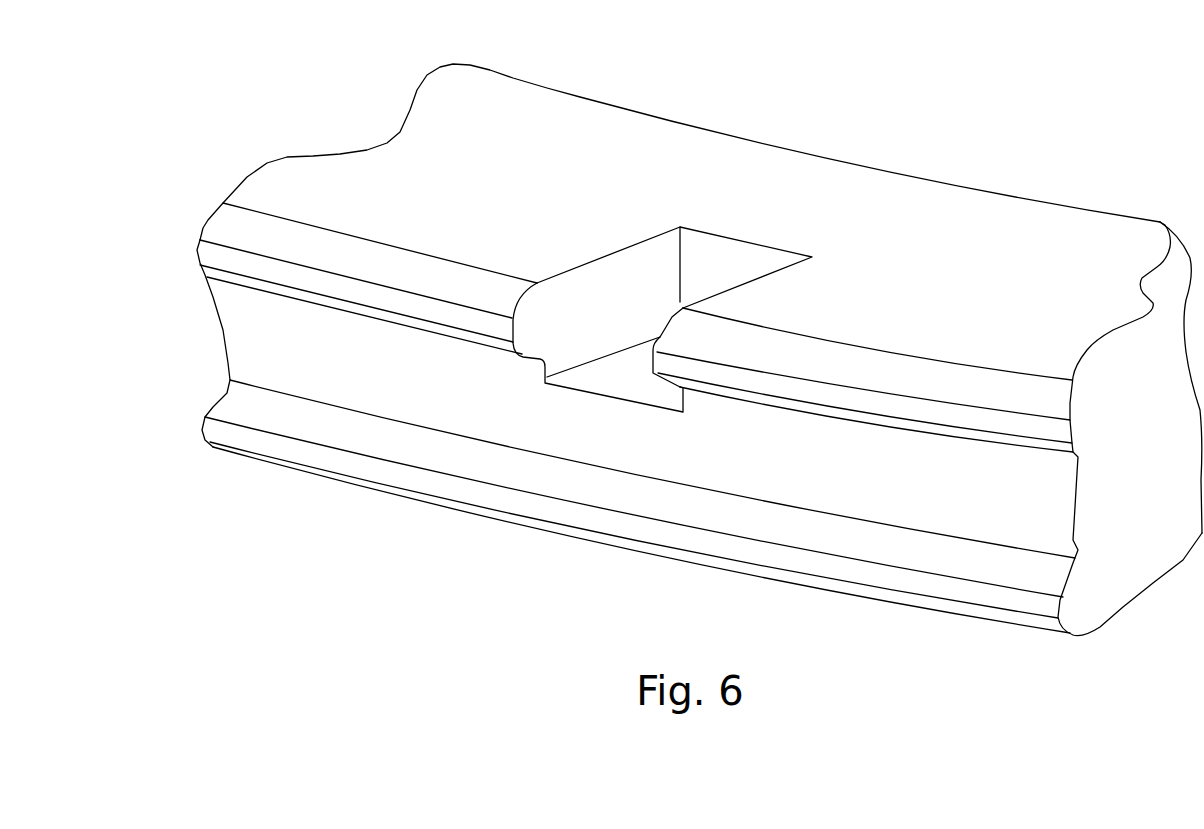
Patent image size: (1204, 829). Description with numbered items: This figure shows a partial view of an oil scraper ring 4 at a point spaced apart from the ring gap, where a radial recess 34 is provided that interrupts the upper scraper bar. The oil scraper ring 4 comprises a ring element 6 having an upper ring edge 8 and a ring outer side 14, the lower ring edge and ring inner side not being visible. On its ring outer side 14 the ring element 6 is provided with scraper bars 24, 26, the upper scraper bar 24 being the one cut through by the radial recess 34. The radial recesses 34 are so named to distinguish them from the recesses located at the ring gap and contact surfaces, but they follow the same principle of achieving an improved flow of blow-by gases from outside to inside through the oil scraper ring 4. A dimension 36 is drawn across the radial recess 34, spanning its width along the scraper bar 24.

The oil scraper ring 4 is at (633, 436).
The ring element 6 is at (1130, 429).
The upper ring edge 8 is at (680, 176).
The ring outer side 14 is at (641, 417).
The scraper bar 24 is at (636, 324).
The scraper bar 26 is at (634, 517).
The radial recess 34 is at (662, 319).
The notch width 36 is at (672, 398).